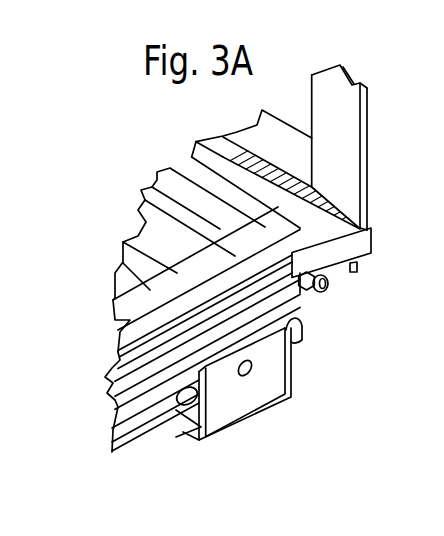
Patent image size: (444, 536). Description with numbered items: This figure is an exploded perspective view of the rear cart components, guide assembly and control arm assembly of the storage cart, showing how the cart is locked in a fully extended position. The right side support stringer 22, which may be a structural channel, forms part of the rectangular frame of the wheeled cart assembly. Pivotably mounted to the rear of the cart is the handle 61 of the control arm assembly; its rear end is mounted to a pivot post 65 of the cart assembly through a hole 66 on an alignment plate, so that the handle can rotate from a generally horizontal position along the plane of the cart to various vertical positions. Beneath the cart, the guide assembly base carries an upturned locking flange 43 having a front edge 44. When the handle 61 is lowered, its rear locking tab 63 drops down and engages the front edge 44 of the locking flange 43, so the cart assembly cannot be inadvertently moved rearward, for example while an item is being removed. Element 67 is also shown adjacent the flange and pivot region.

The right side support stringer 22 is at (121, 267).
The locking flange 43 is at (262, 388).
The front edge 44 is at (183, 432).
The handle 61 is at (106, 375).
The rear locking tab 63 is at (210, 400).
The pivot post 65 is at (333, 276).
The hole 66 is at (327, 265).
The bar 67 is at (373, 240).